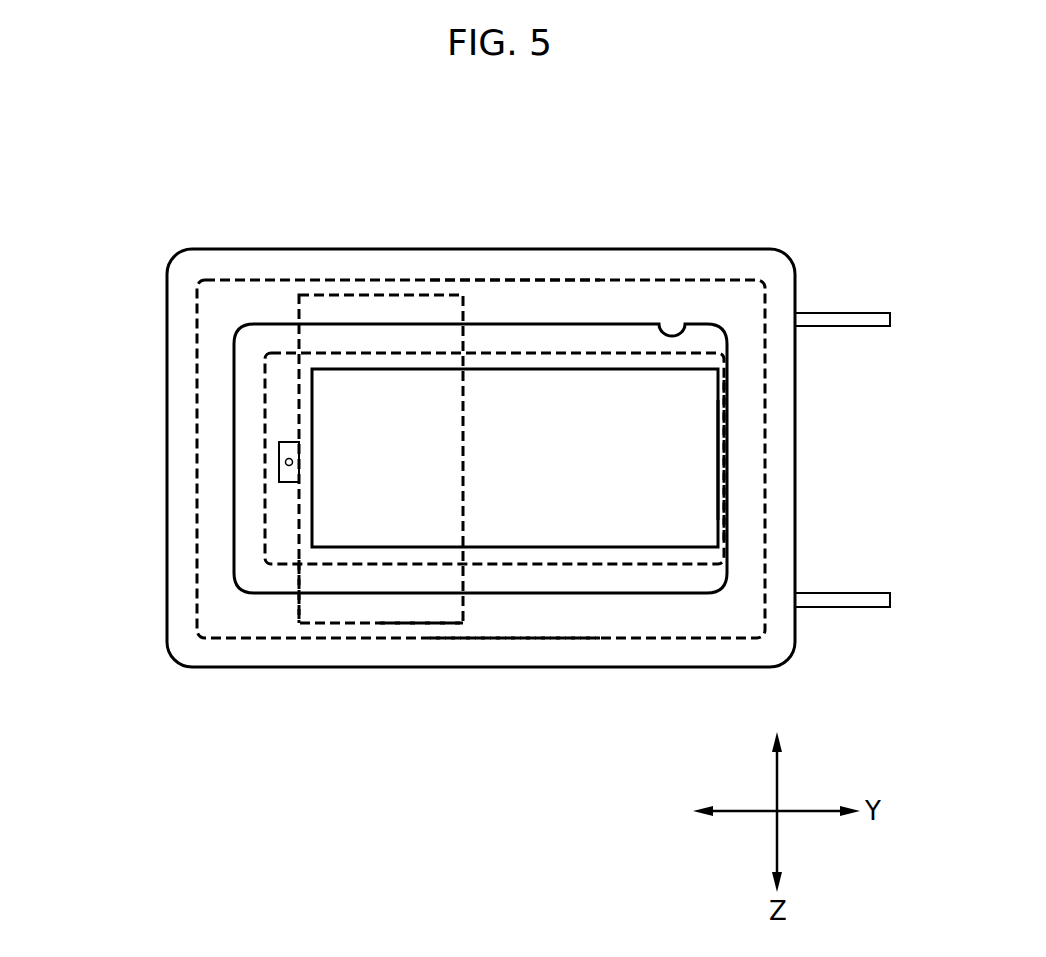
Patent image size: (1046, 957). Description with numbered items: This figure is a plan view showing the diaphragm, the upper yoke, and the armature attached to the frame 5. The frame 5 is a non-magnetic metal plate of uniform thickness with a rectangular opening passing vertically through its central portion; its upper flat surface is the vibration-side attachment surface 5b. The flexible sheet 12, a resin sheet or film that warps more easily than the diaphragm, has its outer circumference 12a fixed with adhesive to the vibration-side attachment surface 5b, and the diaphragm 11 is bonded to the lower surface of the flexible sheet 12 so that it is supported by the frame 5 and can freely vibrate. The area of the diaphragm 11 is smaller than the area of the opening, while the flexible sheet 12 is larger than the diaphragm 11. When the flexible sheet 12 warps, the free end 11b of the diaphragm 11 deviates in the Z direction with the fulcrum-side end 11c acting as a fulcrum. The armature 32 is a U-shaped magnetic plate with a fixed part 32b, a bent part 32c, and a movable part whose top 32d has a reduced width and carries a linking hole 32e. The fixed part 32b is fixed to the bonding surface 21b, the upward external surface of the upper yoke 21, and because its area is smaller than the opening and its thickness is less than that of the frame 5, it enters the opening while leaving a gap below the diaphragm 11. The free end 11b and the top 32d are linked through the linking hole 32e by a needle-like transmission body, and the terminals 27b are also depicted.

The frame 5 is at (163, 617).
The vibration-side attachment surface 5b is at (176, 464).
The diaphragm 11 is at (685, 565).
The free end 11b is at (263, 380).
The fulcrum-side end 11c is at (730, 407).
The flexible sheet 12 is at (765, 449).
The outer circumference 12a is at (549, 280).
The upper yoke 21 is at (299, 583).
The bonding surface 21b is at (422, 577).
The terminal 27b is at (886, 316).
The armature 32 is at (540, 547).
The fixed part 32b is at (397, 369).
The bent part 32c is at (718, 507).
The top 32d is at (287, 477).
The linking hole 32e is at (285, 464).